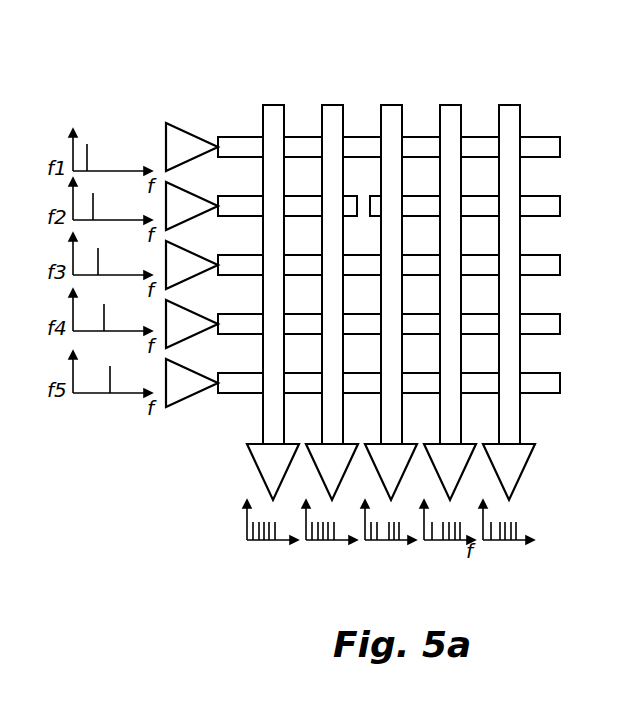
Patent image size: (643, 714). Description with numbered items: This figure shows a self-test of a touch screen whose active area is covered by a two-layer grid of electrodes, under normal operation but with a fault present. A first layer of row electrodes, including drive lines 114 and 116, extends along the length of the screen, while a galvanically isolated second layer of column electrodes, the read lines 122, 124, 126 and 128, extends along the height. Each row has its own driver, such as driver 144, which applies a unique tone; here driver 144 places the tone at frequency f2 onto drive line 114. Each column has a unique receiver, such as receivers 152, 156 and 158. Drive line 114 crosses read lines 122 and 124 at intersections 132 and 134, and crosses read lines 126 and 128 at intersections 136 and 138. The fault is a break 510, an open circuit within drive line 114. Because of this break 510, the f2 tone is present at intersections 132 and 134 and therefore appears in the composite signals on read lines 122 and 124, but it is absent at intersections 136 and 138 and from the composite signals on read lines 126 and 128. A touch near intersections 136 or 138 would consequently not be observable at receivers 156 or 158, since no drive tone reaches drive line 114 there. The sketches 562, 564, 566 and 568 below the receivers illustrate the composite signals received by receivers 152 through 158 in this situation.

The drive line 114 is at (563, 209).
The drive line 116 is at (561, 272).
The read line 122 is at (264, 105).
The read line 124 is at (328, 105).
The read line 126 is at (396, 105).
The read line 128 is at (503, 105).
The intersection 132 is at (275, 207).
The intersection 134 is at (330, 205).
The intersection 136 is at (455, 207).
The intersection 138 is at (512, 207).
The driver 144 is at (183, 184).
The receiver 152 is at (253, 460).
The receiver 156 is at (463, 468).
The receiver 158 is at (531, 446).
The break 510 is at (362, 205).
The sketch 562 is at (253, 542).
The sketch 564 is at (313, 542).
The sketch 566 is at (373, 542).
The sketch 568 is at (492, 542).